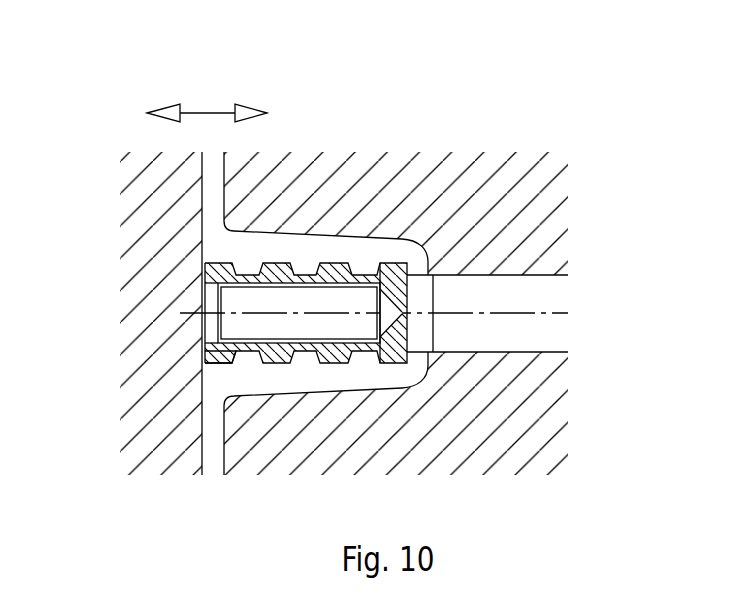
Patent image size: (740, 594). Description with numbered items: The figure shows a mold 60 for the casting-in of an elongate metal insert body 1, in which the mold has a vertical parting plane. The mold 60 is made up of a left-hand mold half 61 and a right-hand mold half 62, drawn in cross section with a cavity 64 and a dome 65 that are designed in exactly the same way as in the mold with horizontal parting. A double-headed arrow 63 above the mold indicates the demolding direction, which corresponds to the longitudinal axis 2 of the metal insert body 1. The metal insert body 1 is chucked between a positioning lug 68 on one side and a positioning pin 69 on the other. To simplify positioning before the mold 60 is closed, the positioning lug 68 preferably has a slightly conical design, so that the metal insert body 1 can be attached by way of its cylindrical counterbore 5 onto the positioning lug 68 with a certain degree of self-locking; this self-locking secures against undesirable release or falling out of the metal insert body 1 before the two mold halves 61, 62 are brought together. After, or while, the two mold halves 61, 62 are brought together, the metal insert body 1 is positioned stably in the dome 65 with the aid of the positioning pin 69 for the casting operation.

The metal insert body 1 is at (253, 394).
The longitudinal axis 2 is at (453, 313).
The cylindrical counterbore 5 is at (214, 348).
The mold 60 is at (346, 285).
The left-hand mold half 61 is at (137, 445).
The right-hand mold half 62 is at (437, 259).
The double-headed arrow 63 is at (205, 113).
The cavity 64 is at (214, 467).
The dome 65 is at (301, 247).
The positioning lug 68 is at (207, 288).
The positioning pin 69 is at (549, 302).